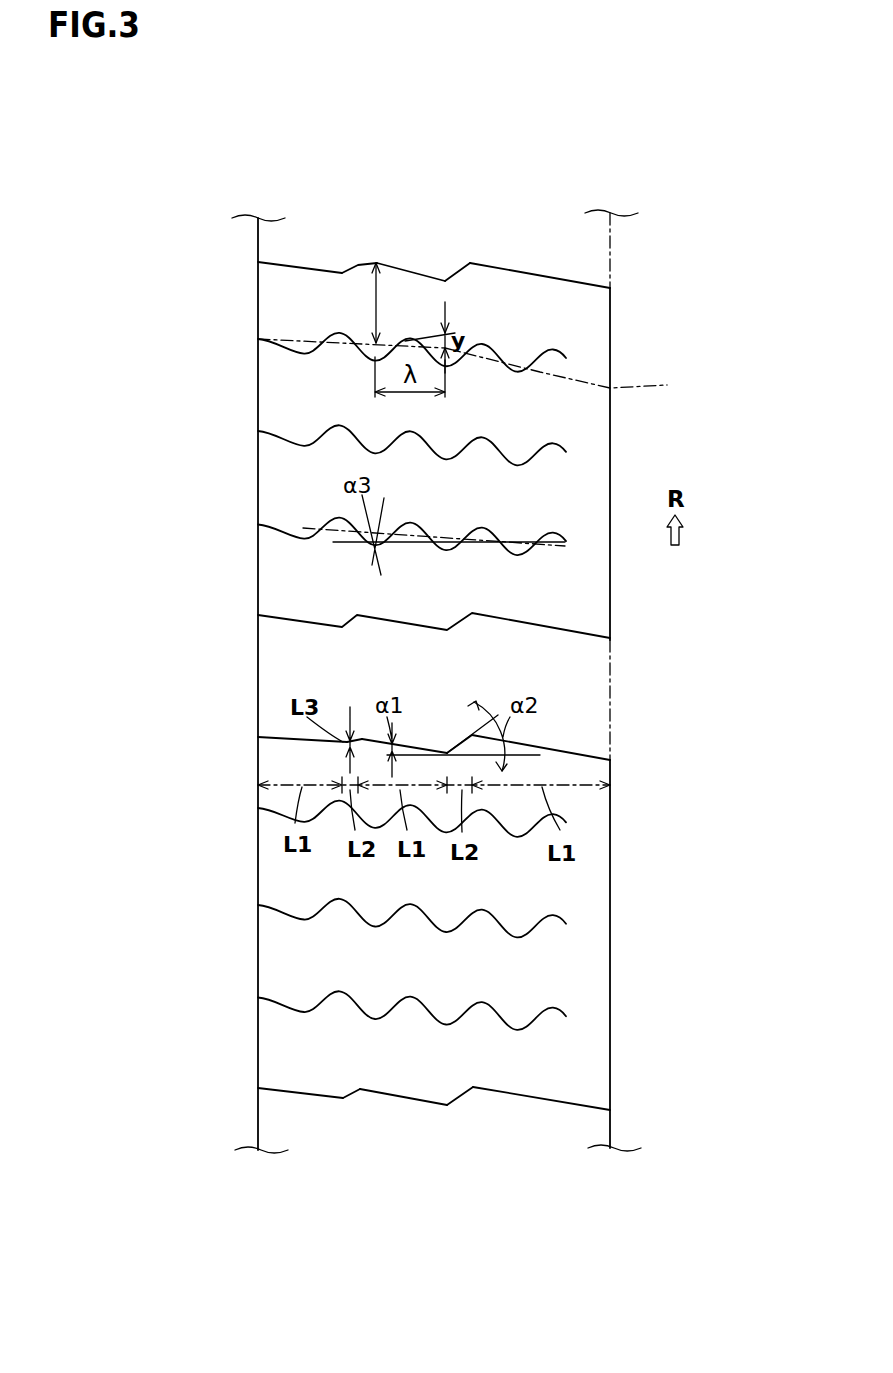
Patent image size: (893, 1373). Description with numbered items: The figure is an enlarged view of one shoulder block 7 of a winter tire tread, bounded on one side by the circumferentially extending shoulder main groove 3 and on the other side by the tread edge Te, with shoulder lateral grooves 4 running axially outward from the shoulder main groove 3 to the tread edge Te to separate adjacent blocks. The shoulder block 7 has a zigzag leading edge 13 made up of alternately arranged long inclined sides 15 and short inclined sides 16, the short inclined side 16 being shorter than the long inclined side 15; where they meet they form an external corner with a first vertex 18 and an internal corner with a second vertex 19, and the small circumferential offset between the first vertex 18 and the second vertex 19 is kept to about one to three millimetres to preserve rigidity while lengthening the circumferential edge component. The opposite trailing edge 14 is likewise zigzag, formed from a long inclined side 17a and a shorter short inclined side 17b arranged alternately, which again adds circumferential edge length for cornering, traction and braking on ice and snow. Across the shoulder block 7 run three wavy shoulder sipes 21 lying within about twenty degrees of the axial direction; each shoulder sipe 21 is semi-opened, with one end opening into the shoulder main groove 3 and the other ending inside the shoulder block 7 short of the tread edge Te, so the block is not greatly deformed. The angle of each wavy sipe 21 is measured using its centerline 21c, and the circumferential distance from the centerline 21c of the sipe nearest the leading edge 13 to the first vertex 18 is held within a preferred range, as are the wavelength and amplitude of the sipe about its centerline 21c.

The shoulder main groove 3 is at (230, 568).
The shoulder lateral groove 4 is at (552, 216).
The shoulder block 7 is at (588, 350).
The zigzag leading edge 13 is at (568, 132).
The trailing edge 14 is at (570, 634).
The long inclined side 15 is at (318, 270).
The short inclined side 16 is at (353, 266).
The long inclined side 17a is at (403, 1100).
The short inclined side 17b is at (352, 1097).
The first vertex 18 is at (355, 265).
The second vertex 19 is at (348, 744).
The shoulder sipe 21 is at (560, 451).
The centerline 21c is at (192, 467).
The tread edge Te is at (612, 318).